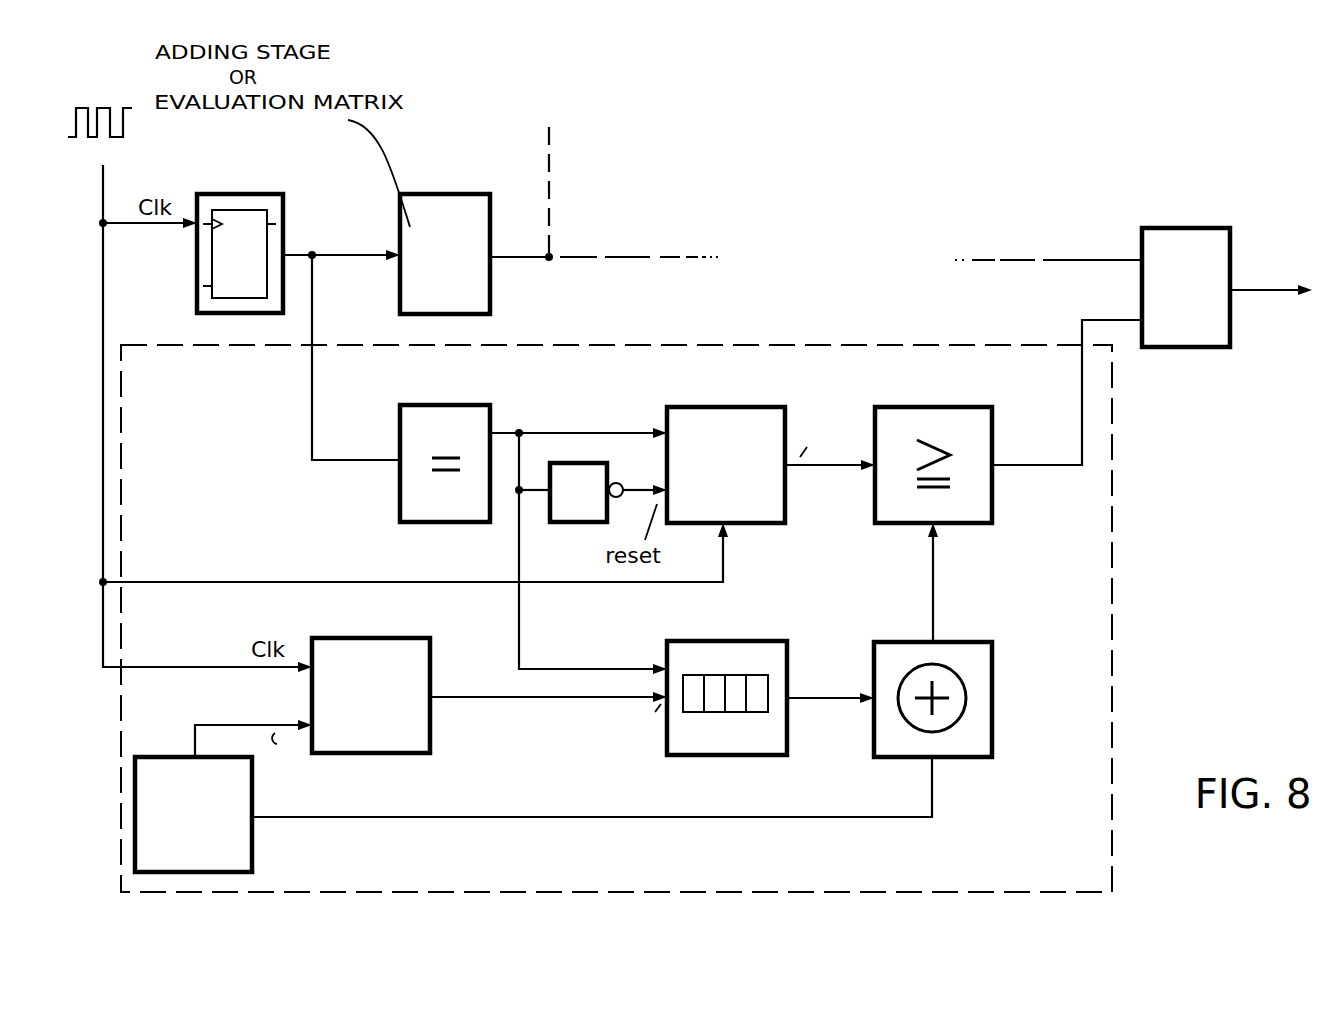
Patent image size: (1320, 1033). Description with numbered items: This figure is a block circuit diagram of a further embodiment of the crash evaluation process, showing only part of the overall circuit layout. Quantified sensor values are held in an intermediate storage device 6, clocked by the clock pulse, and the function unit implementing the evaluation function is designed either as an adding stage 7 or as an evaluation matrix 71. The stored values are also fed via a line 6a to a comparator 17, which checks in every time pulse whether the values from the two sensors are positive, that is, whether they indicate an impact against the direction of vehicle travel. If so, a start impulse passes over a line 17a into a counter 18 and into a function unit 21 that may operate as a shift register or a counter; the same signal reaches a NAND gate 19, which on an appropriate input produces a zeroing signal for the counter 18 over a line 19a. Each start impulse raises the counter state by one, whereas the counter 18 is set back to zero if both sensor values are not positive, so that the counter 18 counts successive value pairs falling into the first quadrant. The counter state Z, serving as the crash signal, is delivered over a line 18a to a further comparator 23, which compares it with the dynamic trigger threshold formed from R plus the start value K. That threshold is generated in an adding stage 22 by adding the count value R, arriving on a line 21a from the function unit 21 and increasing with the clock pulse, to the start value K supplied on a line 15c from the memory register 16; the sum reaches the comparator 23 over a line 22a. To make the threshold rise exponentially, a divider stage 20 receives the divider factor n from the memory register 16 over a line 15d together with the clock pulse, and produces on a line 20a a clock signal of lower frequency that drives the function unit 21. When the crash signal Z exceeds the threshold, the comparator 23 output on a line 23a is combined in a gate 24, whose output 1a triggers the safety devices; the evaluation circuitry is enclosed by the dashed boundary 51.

The intermediate storage device 6 is at (238, 188).
The line 6a is at (307, 246).
The adding stage 7 is at (446, 214).
The evaluation matrix 71 is at (430, 194).
The comparator 17 is at (392, 420).
The line 17a is at (540, 428).
The counter 18 is at (738, 407).
The line 18a is at (833, 468).
The NAND gate 19 is at (577, 463).
The line 19a is at (638, 500).
The divider stage 20 is at (413, 753).
The divided clock output 20a is at (510, 700).
The function unit 21 is at (738, 641).
The line 21a is at (828, 705).
The adding stage 22 is at (985, 640).
The adder output 22a is at (945, 576).
The further comparator 23 is at (960, 405).
The threshold comparator output 23a is at (1017, 468).
The AND gate 24 is at (1180, 350).
The output signal 1a is at (1275, 283).
The RAM memory 16 is at (260, 845).
The line 15d is at (182, 752).
The line 15c is at (917, 827).
The evaluation circuit 51 is at (1112, 625).